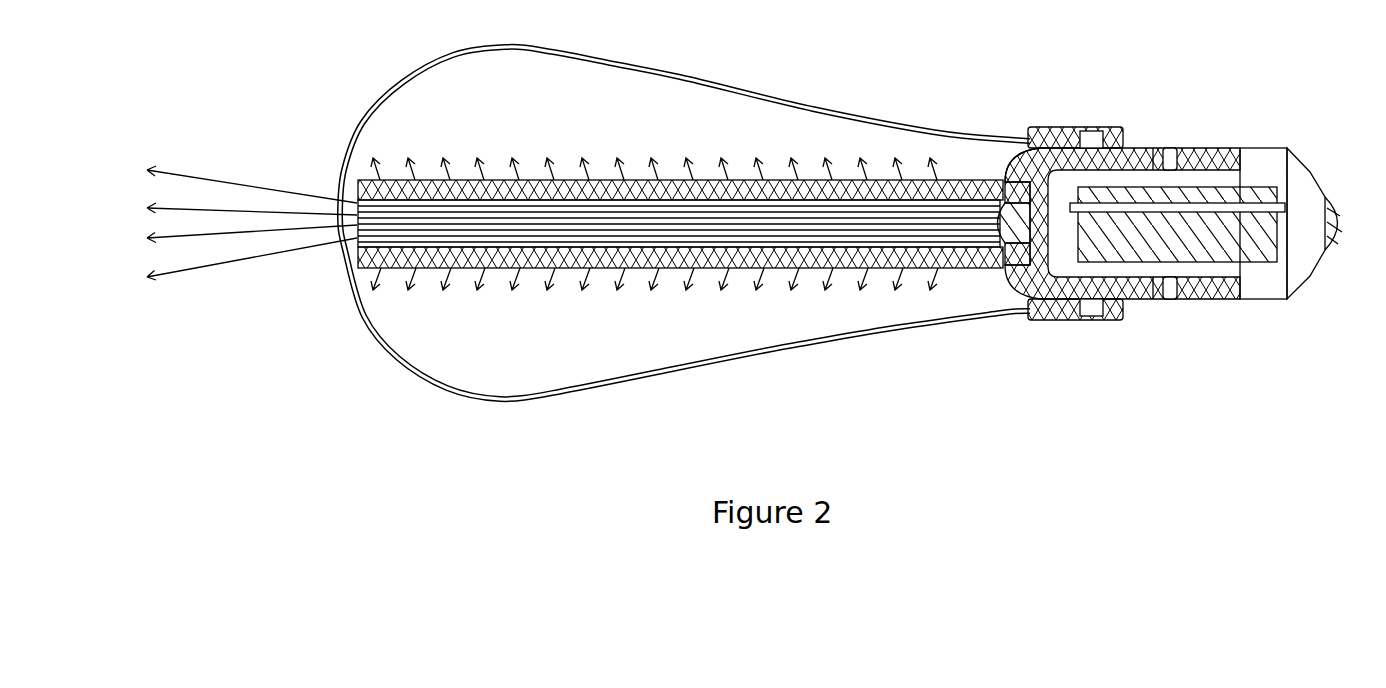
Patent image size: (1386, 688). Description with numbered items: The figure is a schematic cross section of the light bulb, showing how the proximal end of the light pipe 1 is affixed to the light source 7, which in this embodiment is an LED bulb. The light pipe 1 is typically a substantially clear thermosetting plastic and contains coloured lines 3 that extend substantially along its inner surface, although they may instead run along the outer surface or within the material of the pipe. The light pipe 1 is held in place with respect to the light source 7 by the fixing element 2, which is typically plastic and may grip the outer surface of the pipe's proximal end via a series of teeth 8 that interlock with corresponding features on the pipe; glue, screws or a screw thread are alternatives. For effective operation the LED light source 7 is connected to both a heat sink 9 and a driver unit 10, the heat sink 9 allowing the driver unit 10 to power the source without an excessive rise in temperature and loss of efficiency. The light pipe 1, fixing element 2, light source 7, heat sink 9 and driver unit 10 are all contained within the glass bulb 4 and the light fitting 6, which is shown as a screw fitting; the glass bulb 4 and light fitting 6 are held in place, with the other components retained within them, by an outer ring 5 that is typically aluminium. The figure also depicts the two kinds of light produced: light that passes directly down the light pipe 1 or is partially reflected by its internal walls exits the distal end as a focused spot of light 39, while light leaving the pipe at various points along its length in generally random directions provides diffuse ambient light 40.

The light pipe 1 is at (430, 260).
The fixing element 2 is at (1013, 177).
The coloured lines 3 is at (517, 233).
The glass bulb 4 is at (343, 268).
The outer ring 5 is at (1086, 130).
The light fitting 6 is at (1283, 300).
The light source 7 is at (1010, 248).
The teeth 8 is at (1002, 270).
The heat sink 9 is at (1072, 266).
The driver unit 10 is at (1130, 250).
The focused light 39 is at (143, 155).
The ambient light 40 is at (935, 148).